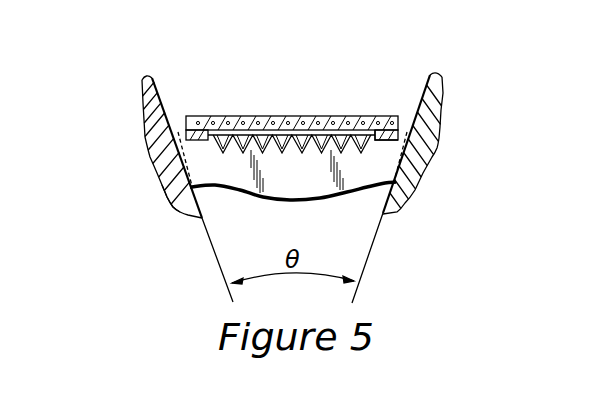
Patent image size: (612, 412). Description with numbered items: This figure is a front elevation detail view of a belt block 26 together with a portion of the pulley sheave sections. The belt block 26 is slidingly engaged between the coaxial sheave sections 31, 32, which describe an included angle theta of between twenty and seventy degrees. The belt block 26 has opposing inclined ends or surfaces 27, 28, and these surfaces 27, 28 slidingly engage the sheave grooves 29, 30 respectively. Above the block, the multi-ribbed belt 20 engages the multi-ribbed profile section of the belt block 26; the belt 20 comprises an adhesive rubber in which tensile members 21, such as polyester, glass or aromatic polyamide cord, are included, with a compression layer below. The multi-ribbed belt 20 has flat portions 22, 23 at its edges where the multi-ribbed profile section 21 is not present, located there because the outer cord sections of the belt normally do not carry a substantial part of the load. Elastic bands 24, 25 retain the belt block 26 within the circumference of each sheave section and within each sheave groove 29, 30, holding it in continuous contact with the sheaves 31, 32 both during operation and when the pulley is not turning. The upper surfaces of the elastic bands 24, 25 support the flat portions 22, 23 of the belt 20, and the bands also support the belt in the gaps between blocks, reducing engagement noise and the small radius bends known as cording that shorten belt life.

The multi-ribbed belt 20 is at (337, 117).
The tensile members 21 is at (253, 120).
The flat portion 22 is at (187, 117).
The flat portion 23 is at (393, 122).
The elastic band 24 is at (172, 177).
The elastic band 25 is at (387, 138).
The belt block 26 is at (240, 188).
The inclined surface 28 is at (408, 156).
The inclined surface 27 is at (167, 198).
The sheave groove 29 is at (150, 77).
The sheave groove 30 is at (433, 77).
The sheave section 31 is at (150, 157).
The sheave section 32 is at (442, 90).